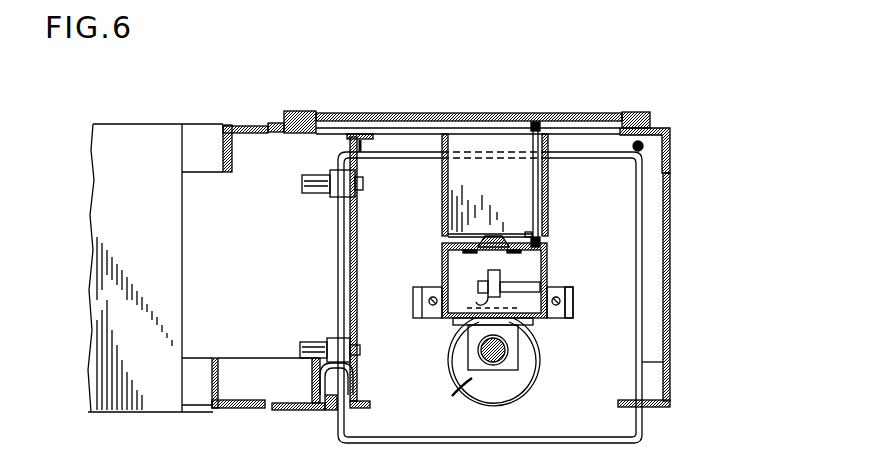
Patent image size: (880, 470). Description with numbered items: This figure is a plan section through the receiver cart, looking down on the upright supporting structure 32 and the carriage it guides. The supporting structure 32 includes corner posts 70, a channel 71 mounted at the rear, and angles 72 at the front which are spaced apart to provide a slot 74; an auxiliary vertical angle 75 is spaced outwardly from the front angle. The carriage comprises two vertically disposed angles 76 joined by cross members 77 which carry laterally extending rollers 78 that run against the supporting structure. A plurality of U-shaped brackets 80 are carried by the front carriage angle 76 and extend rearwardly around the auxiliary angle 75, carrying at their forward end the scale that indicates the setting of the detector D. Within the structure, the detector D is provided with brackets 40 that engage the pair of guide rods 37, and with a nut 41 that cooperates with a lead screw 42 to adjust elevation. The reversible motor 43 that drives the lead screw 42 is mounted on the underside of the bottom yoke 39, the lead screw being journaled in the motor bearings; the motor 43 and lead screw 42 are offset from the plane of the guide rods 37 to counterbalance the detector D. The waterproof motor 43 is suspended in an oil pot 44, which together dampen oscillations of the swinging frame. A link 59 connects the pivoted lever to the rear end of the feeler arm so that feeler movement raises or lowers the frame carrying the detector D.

The upright supporting structure 32 is at (142, 414).
The guide rods 37 is at (413, 300).
The bottom yoke 39 is at (574, 308).
The brackets 40 is at (432, 287).
The nut 41 is at (468, 345).
The lead screw 42 is at (508, 352).
The reversible motor 43 is at (538, 370).
The oil pot 44 is at (388, 443).
The link 59 is at (672, 139).
The corner posts 70 is at (628, 113).
The channel 71 is at (237, 172).
The angle 72 is at (218, 360).
The slot 74 is at (262, 408).
The auxiliary vertical angle 75 is at (330, 410).
The vertically disposed angles 76 is at (357, 137).
The cross members 77 is at (358, 235).
The rollers 78 is at (318, 195).
The U-shaped brackets 80 is at (354, 372).
The detector D is at (556, 229).